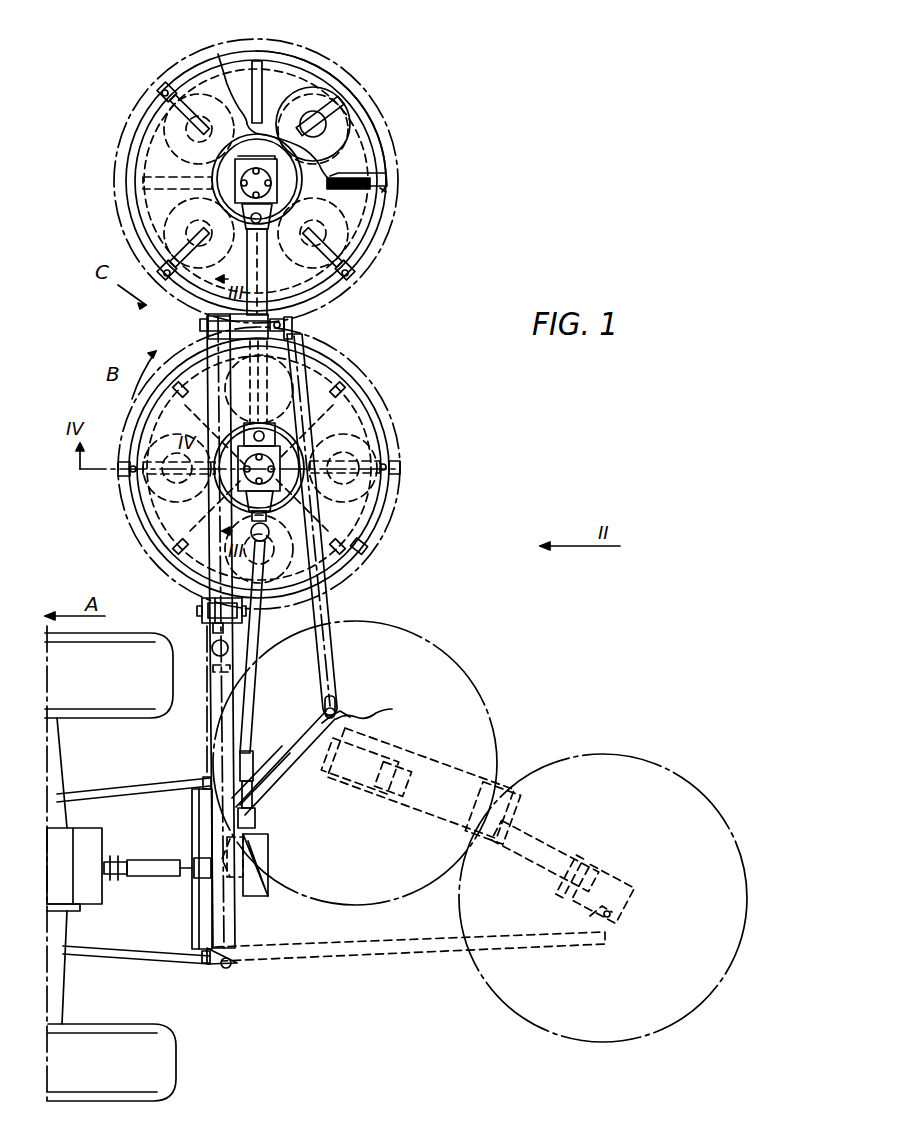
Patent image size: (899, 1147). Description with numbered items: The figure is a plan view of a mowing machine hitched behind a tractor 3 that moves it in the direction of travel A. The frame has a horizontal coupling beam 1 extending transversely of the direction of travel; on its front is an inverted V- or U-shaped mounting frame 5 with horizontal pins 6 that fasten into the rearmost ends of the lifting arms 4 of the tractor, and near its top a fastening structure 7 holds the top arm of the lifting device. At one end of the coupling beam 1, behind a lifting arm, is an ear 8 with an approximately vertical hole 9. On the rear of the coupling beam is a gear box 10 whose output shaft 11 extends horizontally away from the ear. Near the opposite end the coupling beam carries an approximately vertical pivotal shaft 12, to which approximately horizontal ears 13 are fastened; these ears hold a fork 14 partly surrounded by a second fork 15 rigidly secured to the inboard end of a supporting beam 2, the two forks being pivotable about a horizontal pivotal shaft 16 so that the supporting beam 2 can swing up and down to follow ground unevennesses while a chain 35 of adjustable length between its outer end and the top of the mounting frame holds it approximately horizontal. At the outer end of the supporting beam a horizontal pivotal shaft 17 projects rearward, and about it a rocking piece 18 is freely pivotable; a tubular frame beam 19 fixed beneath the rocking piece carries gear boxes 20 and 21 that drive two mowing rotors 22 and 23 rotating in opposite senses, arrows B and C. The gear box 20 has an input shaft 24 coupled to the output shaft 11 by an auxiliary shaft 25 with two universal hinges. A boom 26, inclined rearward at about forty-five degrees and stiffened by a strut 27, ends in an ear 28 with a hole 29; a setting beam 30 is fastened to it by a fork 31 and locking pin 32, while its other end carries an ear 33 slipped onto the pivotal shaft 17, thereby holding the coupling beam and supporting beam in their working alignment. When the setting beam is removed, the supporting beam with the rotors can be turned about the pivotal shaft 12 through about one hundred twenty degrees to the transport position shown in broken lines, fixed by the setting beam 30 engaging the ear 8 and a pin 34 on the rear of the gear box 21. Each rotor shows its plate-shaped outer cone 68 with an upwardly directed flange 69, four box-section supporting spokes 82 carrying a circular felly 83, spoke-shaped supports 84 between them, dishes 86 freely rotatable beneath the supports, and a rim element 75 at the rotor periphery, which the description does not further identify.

The coupling beam 1 is at (215, 697).
The supporting beam 2 is at (215, 540).
The tractor 3 is at (111, 1024).
The lifting arms 4 is at (152, 784).
The mounting frame 5 is at (194, 918).
The horizontal pins 6 is at (204, 776).
The fastening structure 7 is at (150, 864).
The ear 8 is at (226, 966).
The hole 9 is at (234, 962).
The gear box 10 is at (262, 895).
The output shaft 11 is at (255, 815).
The pivotal shaft 12 is at (218, 664).
The ears 13 is at (210, 646).
The fork 14 is at (213, 628).
The second fork 15 is at (205, 597).
The pivotal shaft 16 is at (202, 612).
The pivotal shaft 17 is at (205, 320).
The rocking piece 18 is at (264, 302).
The frame beam 19 is at (267, 372).
The gear box 20 is at (284, 458).
The gear box 21 is at (190, 170).
The mowing rotor 22 is at (402, 428).
The mowing rotor 23 is at (386, 238).
The input shaft 24 is at (268, 530).
The auxiliary shaft 25 is at (255, 698).
The boom 26 is at (288, 768).
The strut 27 is at (262, 762).
The ear 28 is at (324, 706).
The hole 29 is at (360, 716).
The setting beam 30 is at (330, 642).
The fork 31 is at (340, 710).
The locking pin 32 is at (330, 700).
The ear 33 is at (292, 324).
The pin 34 is at (277, 164).
The chain 35 is at (205, 744).
The outer cone 68 is at (150, 140).
The flange 69 is at (363, 552).
The rim 75 is at (152, 86).
The supporting spokes 82 is at (257, 58).
The felly 83 is at (375, 154).
The spoke-shaped support 84 is at (348, 94).
The dishes 86 is at (356, 116).